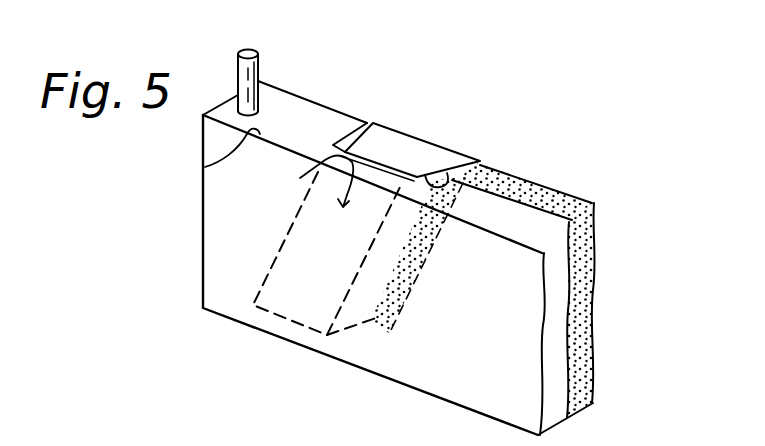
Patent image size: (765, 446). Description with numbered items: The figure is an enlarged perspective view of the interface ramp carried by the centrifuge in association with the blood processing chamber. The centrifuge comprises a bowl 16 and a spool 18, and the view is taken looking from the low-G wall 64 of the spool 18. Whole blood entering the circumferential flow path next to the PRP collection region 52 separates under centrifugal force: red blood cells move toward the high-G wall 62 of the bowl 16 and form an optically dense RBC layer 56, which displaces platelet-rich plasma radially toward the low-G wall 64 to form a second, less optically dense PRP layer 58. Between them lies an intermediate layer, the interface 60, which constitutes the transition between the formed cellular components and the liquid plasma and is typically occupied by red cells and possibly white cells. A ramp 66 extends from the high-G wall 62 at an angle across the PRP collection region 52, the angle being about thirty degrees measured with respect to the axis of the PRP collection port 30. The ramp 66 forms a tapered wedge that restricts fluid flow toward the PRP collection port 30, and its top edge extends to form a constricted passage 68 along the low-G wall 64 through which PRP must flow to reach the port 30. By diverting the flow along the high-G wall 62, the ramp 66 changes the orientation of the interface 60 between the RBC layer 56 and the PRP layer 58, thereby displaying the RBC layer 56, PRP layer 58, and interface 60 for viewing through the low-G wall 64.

The bowl 16 is at (435, 144).
The spool 18 is at (210, 217).
The PRP collection port 30 is at (257, 50).
The PRP collection region 52 is at (386, 242).
The RBC layer 56 is at (561, 206).
The PRP layer 58 is at (537, 231).
The interface 60 is at (517, 202).
The high-G wall 62 is at (328, 112).
The low-G wall 64 is at (205, 167).
The ramp 66 is at (463, 157).
The constricted passage 68 is at (306, 181).